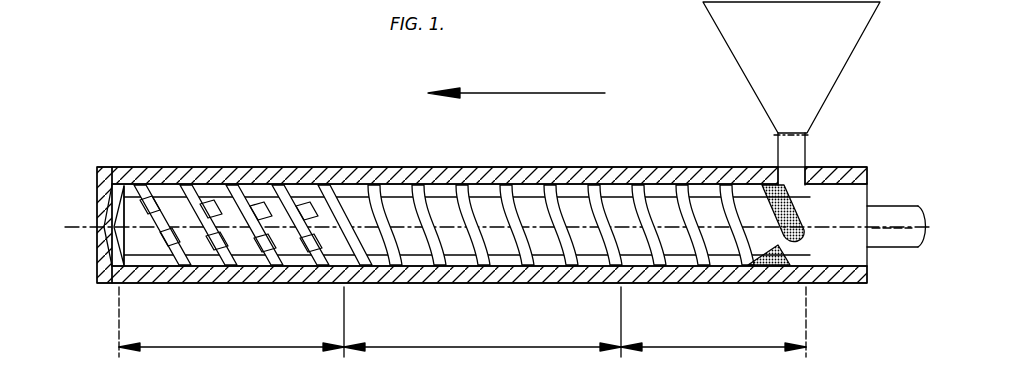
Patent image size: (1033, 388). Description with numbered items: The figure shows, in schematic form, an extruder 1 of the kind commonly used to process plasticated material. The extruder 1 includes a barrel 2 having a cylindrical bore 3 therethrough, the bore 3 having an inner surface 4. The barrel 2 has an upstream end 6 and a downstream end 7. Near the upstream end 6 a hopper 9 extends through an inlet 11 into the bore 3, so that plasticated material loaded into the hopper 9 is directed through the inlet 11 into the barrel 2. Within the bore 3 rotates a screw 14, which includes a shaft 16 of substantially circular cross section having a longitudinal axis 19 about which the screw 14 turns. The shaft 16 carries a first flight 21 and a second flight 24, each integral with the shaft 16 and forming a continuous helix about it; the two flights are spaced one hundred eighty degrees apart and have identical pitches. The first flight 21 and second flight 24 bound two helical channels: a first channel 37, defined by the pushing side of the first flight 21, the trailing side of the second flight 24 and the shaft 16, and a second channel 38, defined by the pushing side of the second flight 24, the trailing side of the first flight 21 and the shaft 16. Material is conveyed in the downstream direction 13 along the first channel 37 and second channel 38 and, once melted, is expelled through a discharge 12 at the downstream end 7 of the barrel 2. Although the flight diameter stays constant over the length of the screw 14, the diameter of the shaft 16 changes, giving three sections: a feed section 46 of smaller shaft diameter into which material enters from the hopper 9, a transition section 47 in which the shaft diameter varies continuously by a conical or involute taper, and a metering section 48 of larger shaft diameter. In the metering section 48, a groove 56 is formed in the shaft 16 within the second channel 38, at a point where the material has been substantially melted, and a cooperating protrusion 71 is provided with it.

The extruder 1 is at (252, 90).
The barrel 2 is at (540, 167).
The bore 3 is at (440, 183).
The inner surface 4 is at (440, 268).
The upstream end 6 is at (867, 172).
The downstream end 7 is at (97, 168).
The hopper 9 is at (717, 25).
The inlet 11 is at (806, 170).
The discharge 12 is at (97, 222).
The downstream direction 13 is at (522, 93).
The screw 14 is at (896, 184).
The shaft 16 is at (632, 253).
The longitudinal axis 19 is at (68, 236).
The first flight 21 is at (283, 185).
The second flight 24 is at (232, 185).
The first channel 37 is at (642, 187).
The second channel 38 is at (687, 195).
The feed section 46 is at (737, 346).
The transition section 47 is at (507, 346).
The metering section 48 is at (237, 346).
The groove 56 is at (258, 240).
The protrusion 71 is at (217, 247).